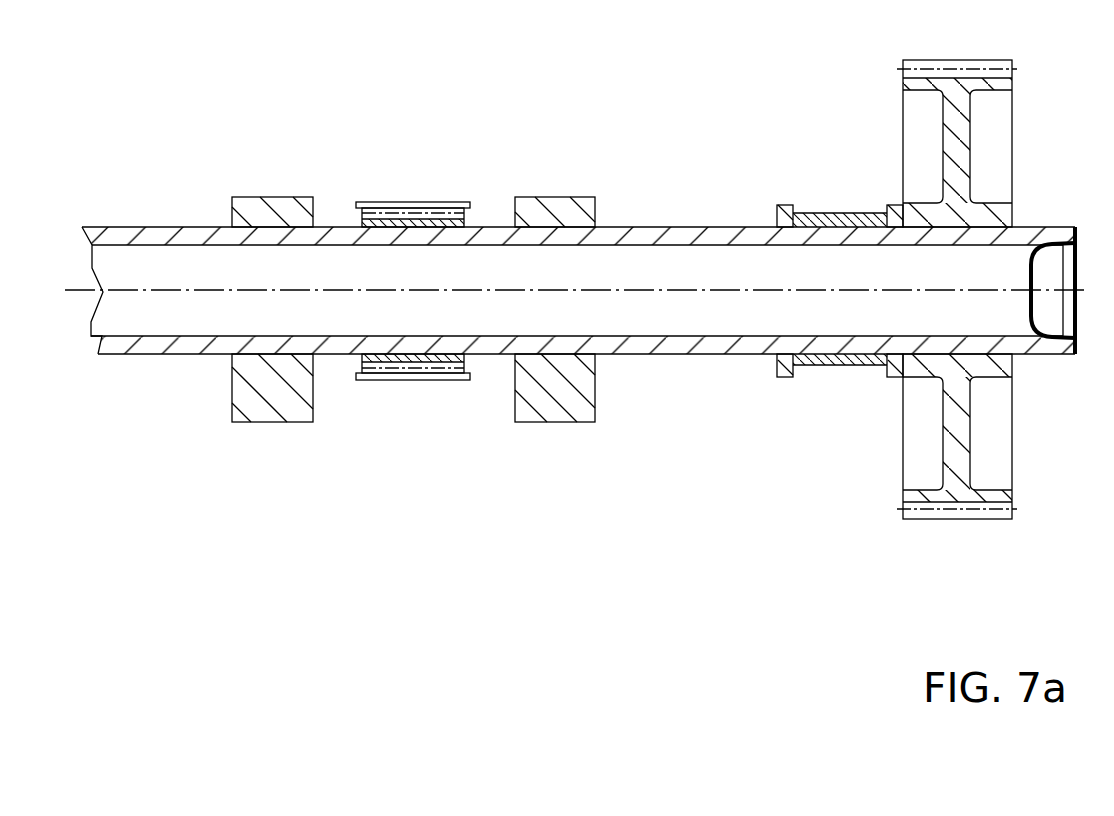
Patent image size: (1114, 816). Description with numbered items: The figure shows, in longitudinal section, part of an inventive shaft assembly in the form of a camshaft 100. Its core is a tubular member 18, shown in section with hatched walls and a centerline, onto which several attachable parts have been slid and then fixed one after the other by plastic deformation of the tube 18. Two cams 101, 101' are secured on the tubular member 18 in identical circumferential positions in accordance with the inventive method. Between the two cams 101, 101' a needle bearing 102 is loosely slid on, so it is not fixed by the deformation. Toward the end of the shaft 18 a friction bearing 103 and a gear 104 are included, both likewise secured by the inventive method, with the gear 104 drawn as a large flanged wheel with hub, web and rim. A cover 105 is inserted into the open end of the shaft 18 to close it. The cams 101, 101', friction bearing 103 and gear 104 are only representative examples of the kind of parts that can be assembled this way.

The camshaft 100 is at (632, 159).
The tubular member 18 is at (713, 240).
The cam 101 is at (272, 275).
The cam 101' is at (555, 277).
The needle bearing 102 is at (405, 204).
The friction bearing 103 is at (836, 210).
The gear 104 is at (961, 90).
The cover 105 is at (1043, 240).